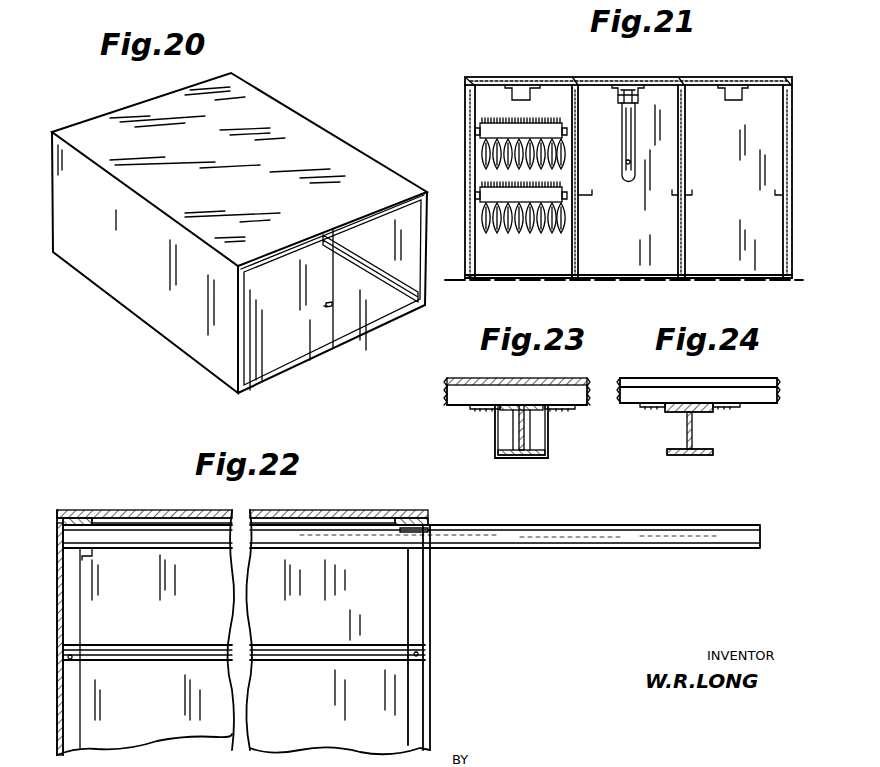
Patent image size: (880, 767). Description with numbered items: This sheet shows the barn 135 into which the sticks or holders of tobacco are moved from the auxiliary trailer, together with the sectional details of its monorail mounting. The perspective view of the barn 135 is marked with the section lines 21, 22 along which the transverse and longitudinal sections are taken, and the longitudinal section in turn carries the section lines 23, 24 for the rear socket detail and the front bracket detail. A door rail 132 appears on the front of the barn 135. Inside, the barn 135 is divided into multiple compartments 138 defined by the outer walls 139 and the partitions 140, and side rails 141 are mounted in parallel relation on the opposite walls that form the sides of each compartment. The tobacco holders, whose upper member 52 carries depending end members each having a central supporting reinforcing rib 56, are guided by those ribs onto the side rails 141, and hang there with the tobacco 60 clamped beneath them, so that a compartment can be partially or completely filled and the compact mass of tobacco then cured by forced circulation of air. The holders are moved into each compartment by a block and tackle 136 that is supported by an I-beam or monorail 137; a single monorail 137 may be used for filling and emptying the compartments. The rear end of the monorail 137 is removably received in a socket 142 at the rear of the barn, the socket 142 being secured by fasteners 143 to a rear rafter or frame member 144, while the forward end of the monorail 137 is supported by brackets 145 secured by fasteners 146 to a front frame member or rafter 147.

In FIG. 20, the section line 21— 21 is at (385, 137).
In FIG. 20, the section line 22— 22 is at (106, 103).
In FIG. 22, the section line 23— 23 is at (98, 478).
In FIG. 22, the section line 24— 24 is at (433, 475).
In FIG. 21, the upper member 52 is at (530, 136).
In FIG. 21, the central supporting reinforcing rib 56 is at (476, 132).
In FIG. 21, the hanging articles 60 is at (545, 158).
In FIG. 20, the door rail 132 is at (384, 262).
In FIG. 20, the barn 135 is at (291, 105).
In FIG. 21, the barn 135 is at (507, 76).
In FIG. 22, the barn 135 is at (326, 508).
In FIG. 21, the block and tackle 136 is at (631, 168).
In FIG. 23, the I-beam or monorail 137 is at (538, 458).
In FIG. 24, the I-beam or monorail 137 is at (694, 436).
In FIG. 22, the I-beam or monorail 137 is at (673, 525).
In FIG. 21, the compartments 138 is at (572, 276).
In FIG. 21, the outer walls 139 is at (474, 275).
In FIG. 21, the partitions 140 is at (578, 246).
In FIG. 22, the partitions 140 is at (405, 679).
In FIG. 21, the side rails 141 is at (580, 195).
In FIG. 22, the side rails 141 is at (268, 660).
In FIG. 21, the socket 142 is at (514, 101).
In FIG. 23, the socket 142 is at (503, 458).
In FIG. 22, the socket 142 is at (62, 568).
In FIG. 23, the fasteners 143 is at (474, 411).
In FIG. 23, the rear rafter or frame member 144 is at (460, 398).
In FIG. 22, the rear rafter or frame member 144 is at (72, 518).
In FIG. 24, the brackets 145 is at (674, 414).
In FIG. 22, the brackets 145 is at (400, 532).
In FIG. 24, the fasteners 146 is at (642, 407).
In FIG. 24, the front frame member or rafter 147 is at (750, 403).
In FIG. 22, the front frame member or rafter 147 is at (400, 518).